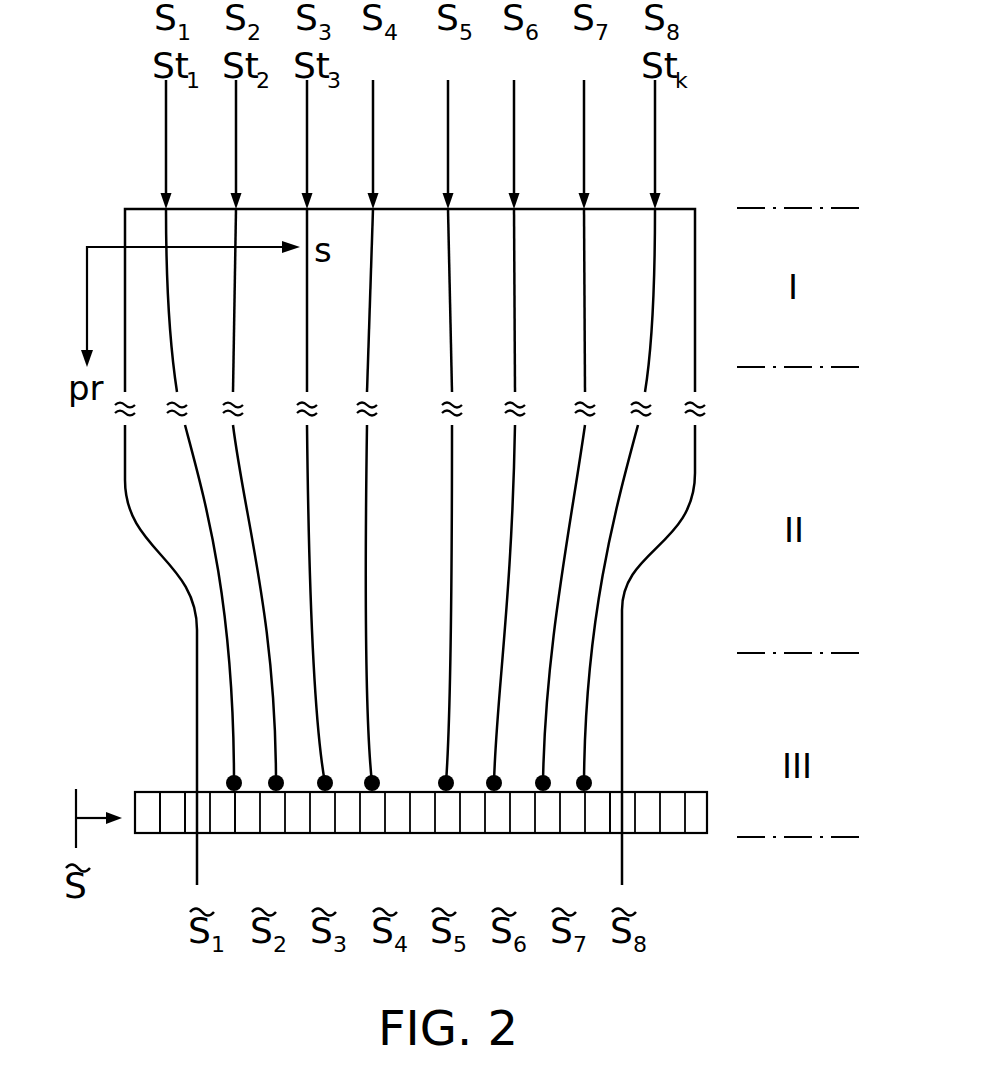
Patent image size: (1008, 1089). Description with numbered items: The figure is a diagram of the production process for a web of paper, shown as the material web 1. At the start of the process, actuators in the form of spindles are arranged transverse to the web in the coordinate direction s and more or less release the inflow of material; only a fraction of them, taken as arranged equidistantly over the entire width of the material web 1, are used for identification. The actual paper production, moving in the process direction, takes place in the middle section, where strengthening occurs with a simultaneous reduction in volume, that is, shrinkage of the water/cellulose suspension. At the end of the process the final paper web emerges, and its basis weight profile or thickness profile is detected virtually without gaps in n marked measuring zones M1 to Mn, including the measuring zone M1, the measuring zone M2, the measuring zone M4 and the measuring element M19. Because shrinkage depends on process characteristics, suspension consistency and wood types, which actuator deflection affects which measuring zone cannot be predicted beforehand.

The material web 1 is at (163, 475).
The measuring zone M1 is at (143, 837).
The measuring zone M2 is at (175, 837).
The measuring zone M4 is at (219, 837).
The measuring element M19 is at (600, 837).
The measuring zone Mn is at (695, 837).